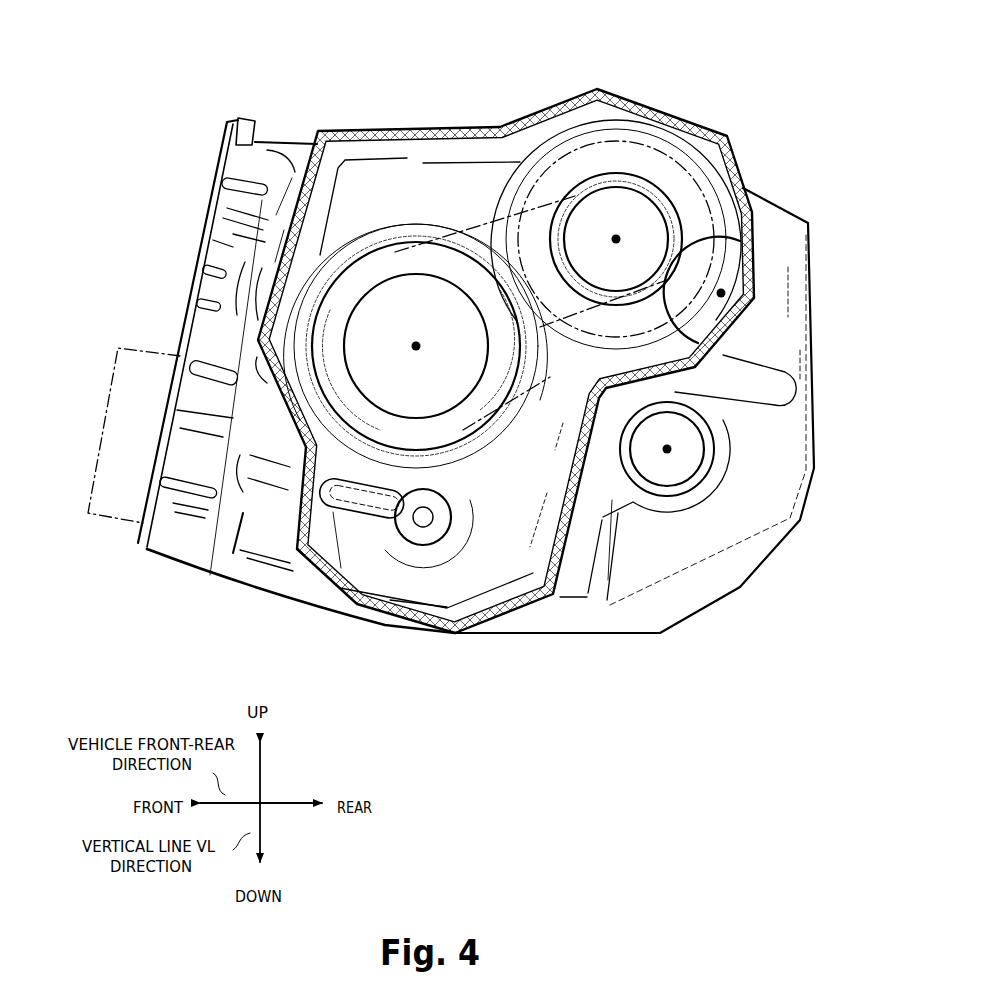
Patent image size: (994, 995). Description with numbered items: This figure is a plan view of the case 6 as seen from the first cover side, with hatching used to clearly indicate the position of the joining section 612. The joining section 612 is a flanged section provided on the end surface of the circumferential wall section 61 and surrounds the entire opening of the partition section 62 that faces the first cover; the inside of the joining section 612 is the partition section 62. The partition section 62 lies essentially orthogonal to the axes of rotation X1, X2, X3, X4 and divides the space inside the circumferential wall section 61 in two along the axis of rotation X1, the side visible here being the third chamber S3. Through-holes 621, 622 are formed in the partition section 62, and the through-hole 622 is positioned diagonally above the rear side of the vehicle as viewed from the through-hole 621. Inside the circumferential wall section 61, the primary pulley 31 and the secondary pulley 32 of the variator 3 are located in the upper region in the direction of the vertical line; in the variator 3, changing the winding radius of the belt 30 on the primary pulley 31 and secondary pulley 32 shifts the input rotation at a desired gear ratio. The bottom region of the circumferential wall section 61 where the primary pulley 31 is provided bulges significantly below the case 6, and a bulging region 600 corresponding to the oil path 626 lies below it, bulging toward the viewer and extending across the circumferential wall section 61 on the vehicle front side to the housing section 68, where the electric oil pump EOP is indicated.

The variator 3 is at (571, 137).
The case 6 is at (754, 113).
The belt 30 is at (488, 217).
The primary pulley 31 is at (336, 358).
The secondary pulley 32 is at (620, 181).
The circumferential wall section 61 is at (525, 147).
The partition section 62 is at (432, 177).
The housing section 68 is at (166, 560).
The bulging region 600 is at (323, 578).
The joining section 612 is at (362, 136).
The through-hole 621 is at (438, 325).
The through-hole 622 is at (640, 228).
The oil path 626 is at (407, 545).
The third chamber S3 is at (399, 200).
The axis of rotation X1 is at (418, 350).
The axis of rotation X2 is at (616, 244).
The axis of rotation X3 is at (727, 303).
The axis of rotation X4 is at (672, 449).
The electric oil pump EOP is at (110, 391).